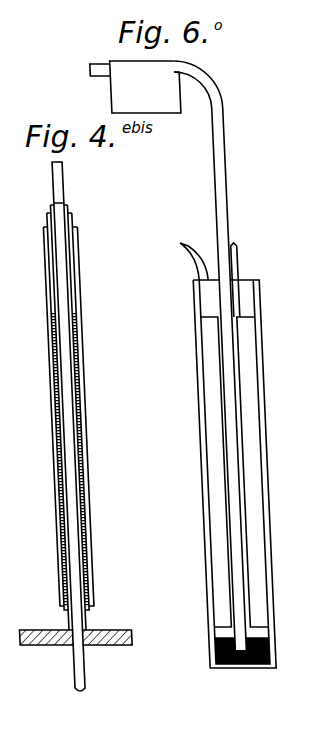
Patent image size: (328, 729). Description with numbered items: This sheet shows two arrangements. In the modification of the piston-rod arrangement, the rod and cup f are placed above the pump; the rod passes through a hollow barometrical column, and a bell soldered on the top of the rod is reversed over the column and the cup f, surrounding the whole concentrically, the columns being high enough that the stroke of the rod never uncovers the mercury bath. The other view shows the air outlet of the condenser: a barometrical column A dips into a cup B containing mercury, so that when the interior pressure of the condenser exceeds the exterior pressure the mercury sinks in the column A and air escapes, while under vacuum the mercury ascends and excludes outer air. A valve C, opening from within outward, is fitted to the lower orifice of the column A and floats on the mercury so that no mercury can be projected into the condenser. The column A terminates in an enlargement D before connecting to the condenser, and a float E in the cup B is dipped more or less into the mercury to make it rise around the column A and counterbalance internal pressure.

In FIG. 6, the barometrical column A is at (166, 593).
In FIG. 6, the cup B is at (247, 455).
In FIG. 6, the valve C is at (243, 666).
In FIG. 6, the enlargement D is at (135, 87).
In FIG. 6, the float E is at (194, 357).
In FIG. 4bis, the cup f is at (62, 417).